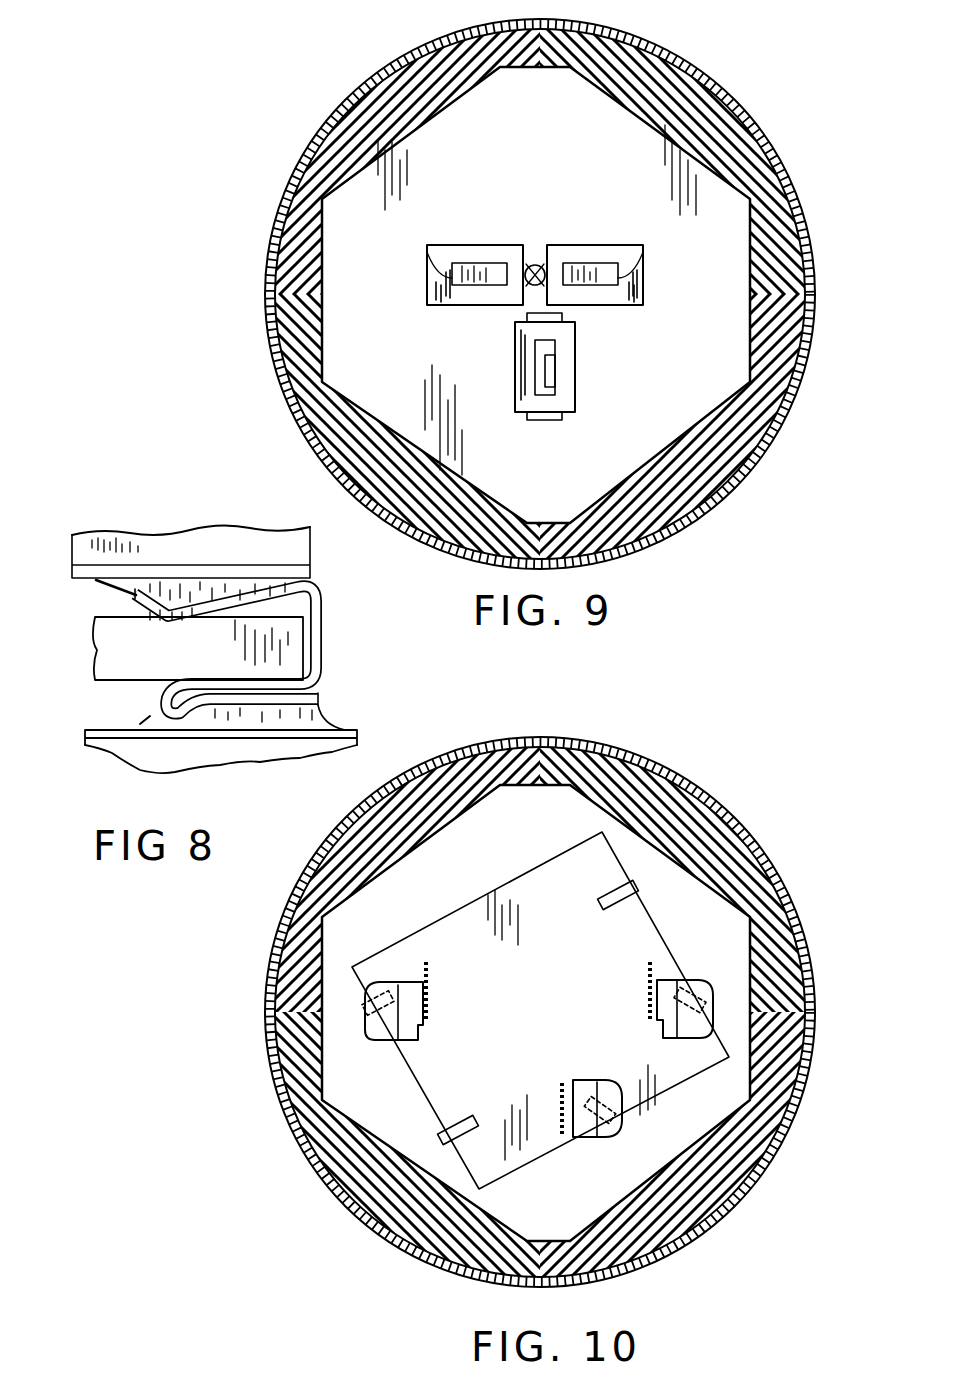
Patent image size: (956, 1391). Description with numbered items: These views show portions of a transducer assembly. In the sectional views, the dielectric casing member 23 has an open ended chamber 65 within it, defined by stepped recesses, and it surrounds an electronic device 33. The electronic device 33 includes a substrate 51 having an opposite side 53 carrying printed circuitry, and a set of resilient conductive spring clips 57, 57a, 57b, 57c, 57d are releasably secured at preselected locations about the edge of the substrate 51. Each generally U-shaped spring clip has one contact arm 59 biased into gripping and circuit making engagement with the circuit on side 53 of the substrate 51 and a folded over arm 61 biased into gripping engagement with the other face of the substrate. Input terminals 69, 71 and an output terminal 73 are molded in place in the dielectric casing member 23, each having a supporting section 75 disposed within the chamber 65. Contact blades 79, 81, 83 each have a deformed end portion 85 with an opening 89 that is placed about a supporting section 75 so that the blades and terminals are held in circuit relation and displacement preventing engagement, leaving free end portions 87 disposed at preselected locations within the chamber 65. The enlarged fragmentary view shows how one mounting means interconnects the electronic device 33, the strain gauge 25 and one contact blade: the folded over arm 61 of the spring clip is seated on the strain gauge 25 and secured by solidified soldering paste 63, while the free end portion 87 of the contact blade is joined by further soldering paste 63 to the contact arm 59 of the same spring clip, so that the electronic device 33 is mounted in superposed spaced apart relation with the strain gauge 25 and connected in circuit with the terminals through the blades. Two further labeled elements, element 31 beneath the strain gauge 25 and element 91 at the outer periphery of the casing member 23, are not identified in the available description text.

In FIG. 9, the dielectric casing member 23 is at (690, 95).
In FIG. 10, the dielectric casing member 23 is at (658, 808).
In FIG. 8, the strain gauge 25 is at (340, 728).
In FIG. 8, the body 31 is at (142, 762).
In FIG. 10, the electronic device 33 is at (529, 858).
In FIG. 10, the substrate 51 is at (522, 1011).
In FIG. 8, the substrate 51 is at (120, 661).
In FIG. 10, the opposite side 53 is at (467, 927).
In FIG. 10, the spring clip 57 is at (636, 887).
In FIG. 8, the spring clip 57 is at (322, 645).
In FIG. 10, the spring clip 57a is at (700, 1000).
In FIG. 10, the spring clip 57b is at (458, 1143).
In FIG. 10, the spring clip 57c is at (380, 1010).
In FIG. 10, the spring clip 57d is at (625, 1140).
In FIG. 10, the contact arm 59 is at (633, 897).
In FIG. 8, the contact arm 59 is at (134, 596).
In FIG. 8, the folded over arm 61 is at (153, 713).
In FIG. 8, the soldering paste 63 is at (195, 585).
In FIG. 9, the chamber 65 is at (610, 118).
In FIG. 10, the chamber 65 is at (588, 817).
In FIG. 9, the input terminal 69 is at (463, 263).
In FIG. 9, the input terminal 71 is at (618, 263).
In FIG. 9, the output terminal 73 is at (553, 388).
In FIG. 9, the supporting section 75 is at (492, 266).
In FIG. 9, the contact blade 79 is at (482, 247).
In FIG. 10, the contact blade 79 is at (408, 975).
In FIG. 9, the contact blade 81 is at (593, 248).
In FIG. 10, the contact blade 81 is at (673, 980).
In FIG. 9, the contact blade 83 is at (563, 333).
In FIG. 10, the contact blade 83 is at (575, 1138).
In FIG. 9, the end portion 85 is at (442, 303).
In FIG. 10, the free end portion 87 is at (697, 987).
In FIG. 8, the free end portion 87 is at (292, 575).
In FIG. 9, the opening 89 is at (450, 262).
In FIG. 9, the outer sleeve 91 is at (752, 126).
In FIG. 10, the outer sleeve 91 is at (730, 817).